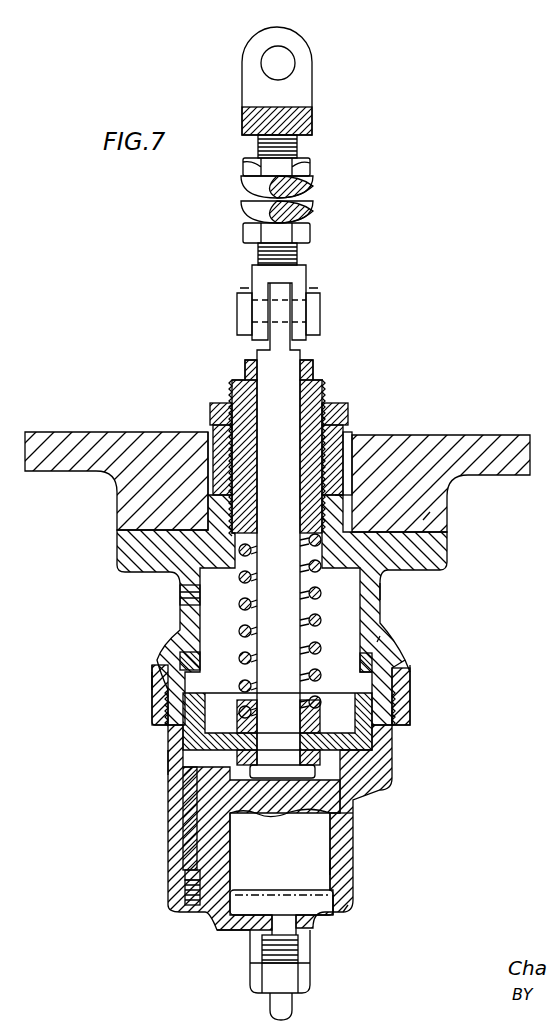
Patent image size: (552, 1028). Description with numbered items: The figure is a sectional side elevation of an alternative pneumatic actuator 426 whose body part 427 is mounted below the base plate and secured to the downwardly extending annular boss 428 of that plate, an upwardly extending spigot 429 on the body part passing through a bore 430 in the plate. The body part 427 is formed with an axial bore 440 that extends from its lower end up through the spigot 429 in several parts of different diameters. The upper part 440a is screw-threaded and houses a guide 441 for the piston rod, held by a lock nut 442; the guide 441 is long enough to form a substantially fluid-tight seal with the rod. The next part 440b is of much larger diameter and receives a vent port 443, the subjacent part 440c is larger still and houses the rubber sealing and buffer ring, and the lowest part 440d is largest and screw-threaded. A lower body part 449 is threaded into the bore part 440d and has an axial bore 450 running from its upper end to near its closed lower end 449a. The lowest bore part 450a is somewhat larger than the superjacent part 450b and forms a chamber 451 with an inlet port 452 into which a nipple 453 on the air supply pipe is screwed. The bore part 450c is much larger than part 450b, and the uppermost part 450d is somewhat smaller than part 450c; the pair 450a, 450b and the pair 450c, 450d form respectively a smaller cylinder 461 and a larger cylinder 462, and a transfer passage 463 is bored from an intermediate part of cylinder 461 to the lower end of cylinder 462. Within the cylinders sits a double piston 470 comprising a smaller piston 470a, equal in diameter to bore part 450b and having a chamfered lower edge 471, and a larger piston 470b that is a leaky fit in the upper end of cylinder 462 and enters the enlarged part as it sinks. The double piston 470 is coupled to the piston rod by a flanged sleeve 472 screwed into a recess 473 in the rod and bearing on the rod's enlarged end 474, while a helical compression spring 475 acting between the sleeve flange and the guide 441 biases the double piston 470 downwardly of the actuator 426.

The guide 441 is at (308, 402).
The upper part of bore 440a is at (212, 417).
The lock nut 442 is at (347, 417).
The bore 430 is at (348, 457).
The spigot 429 is at (335, 495).
The annular boss 428 is at (423, 520).
The axial bore 440 is at (383, 622).
The bore part 440b is at (383, 590).
The body part 427 is at (377, 642).
The pneumatic actuator 426 is at (397, 658).
The bore part 440c is at (410, 672).
The lowest bore part 440d is at (410, 718).
The vent port 443 is at (190, 595).
The helical compression spring 475 is at (316, 616).
The axial bore 450 is at (330, 847).
The lowest bore part 450a is at (333, 900).
The bore part 450b is at (330, 863).
The bore part 450c is at (183, 762).
The uppermost bore part 450d is at (183, 680).
The lower body part 449 is at (340, 823).
The closed lower end 449a is at (345, 915).
The double piston 470 is at (390, 760).
The flanged sleeve 472 is at (327, 717).
The larger piston 470b is at (370, 731).
The larger cylinder 462 is at (393, 765).
The transfer passage 463 is at (192, 797).
The enlarged end of the piston rod 474 is at (250, 828).
The recess 473 is at (280, 851).
The smaller piston 470a is at (322, 890).
The smaller cylinder 461 is at (333, 882).
The inlet port 452 is at (300, 945).
The nipple 453 is at (318, 990).
The chamfered lower edge 471 is at (215, 897).
The chamber 451 is at (258, 907).